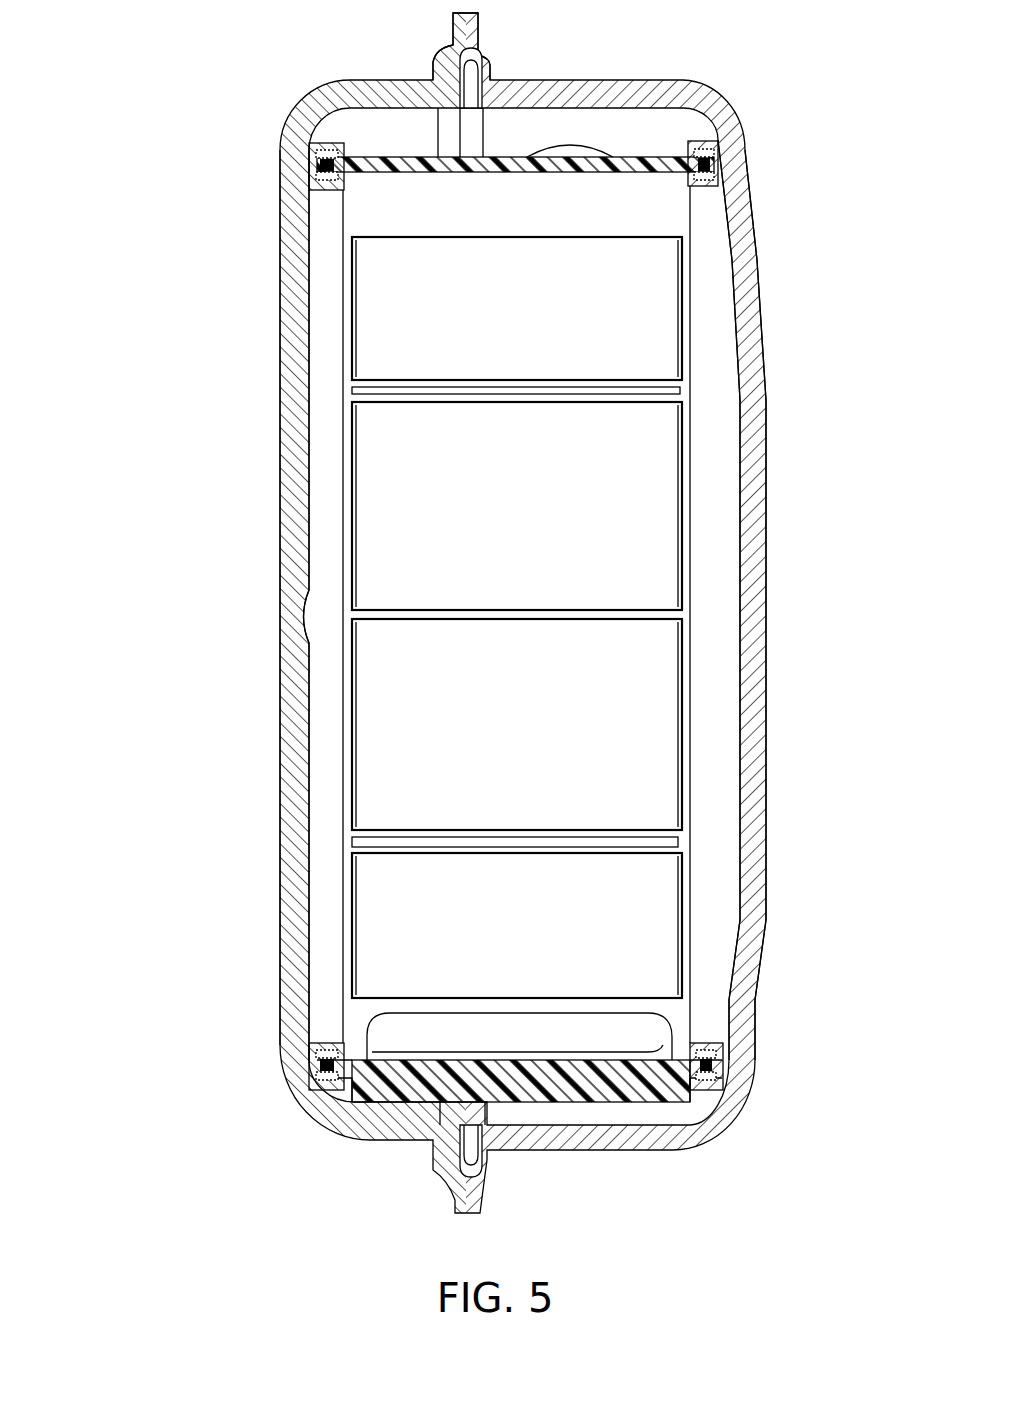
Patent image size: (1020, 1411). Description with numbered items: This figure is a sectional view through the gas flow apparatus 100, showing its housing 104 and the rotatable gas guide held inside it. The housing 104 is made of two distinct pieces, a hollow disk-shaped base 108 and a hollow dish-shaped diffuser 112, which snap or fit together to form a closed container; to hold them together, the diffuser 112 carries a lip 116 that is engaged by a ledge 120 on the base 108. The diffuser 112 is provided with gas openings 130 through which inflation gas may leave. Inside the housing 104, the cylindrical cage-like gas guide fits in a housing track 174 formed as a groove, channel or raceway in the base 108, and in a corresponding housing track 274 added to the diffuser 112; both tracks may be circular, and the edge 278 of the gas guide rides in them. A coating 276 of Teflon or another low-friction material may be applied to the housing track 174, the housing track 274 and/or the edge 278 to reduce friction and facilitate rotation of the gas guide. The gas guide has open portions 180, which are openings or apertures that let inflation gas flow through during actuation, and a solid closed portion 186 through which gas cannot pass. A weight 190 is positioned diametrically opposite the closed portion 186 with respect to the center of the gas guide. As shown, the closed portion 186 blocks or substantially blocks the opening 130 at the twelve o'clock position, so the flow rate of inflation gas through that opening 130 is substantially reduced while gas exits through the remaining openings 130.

The gas flow apparatus 100 is at (242, 805).
The housing 104 is at (597, 1168).
The base 108 is at (290, 570).
The diffuser 112 is at (760, 530).
The lip 116 is at (492, 72).
The ledge 120 is at (451, 55).
The openings 130 is at (585, 345).
The housing track 174 is at (318, 143).
The open portions 180 is at (380, 475).
The closed portion 186 is at (528, 218).
The weight 190 is at (692, 1062).
The housing track 274 is at (714, 141).
The coating 276 is at (325, 153).
The edge 278 is at (327, 165).